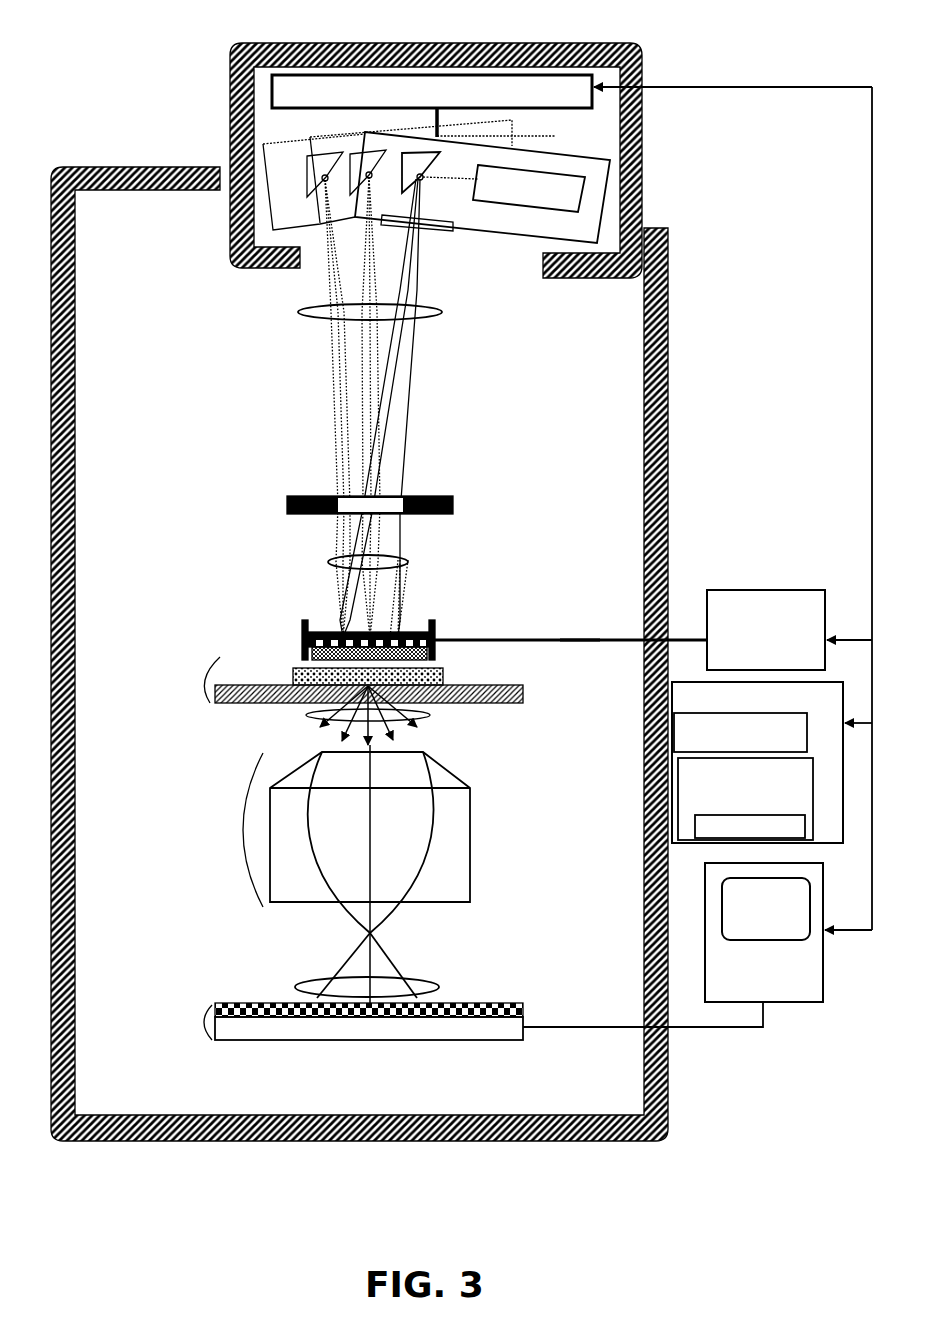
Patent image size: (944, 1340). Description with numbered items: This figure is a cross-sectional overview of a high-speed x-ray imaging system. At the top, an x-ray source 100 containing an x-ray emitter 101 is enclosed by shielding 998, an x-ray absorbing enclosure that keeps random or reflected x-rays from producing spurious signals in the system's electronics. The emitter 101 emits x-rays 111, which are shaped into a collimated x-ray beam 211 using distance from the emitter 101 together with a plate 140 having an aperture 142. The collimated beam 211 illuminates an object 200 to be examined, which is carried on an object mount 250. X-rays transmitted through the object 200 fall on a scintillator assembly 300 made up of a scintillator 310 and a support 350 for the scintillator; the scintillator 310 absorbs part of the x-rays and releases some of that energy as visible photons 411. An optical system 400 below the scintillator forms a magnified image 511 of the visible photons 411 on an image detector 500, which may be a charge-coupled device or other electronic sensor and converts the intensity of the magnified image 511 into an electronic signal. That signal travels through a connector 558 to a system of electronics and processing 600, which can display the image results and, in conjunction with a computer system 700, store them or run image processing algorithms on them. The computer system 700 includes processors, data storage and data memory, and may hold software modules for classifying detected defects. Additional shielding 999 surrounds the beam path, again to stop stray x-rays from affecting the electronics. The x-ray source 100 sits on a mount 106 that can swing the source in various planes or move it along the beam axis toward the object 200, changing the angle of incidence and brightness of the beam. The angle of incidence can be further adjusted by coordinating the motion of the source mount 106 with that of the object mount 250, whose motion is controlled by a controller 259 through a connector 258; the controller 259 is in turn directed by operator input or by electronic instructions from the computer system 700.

The shielding 998 is at (436, 139).
The additional shielding 999 is at (359, 619).
The mount 106 is at (432, 106).
The x-ray source 100 is at (438, 181).
The x-ray emitter 101 is at (438, 156).
The x-rays 111 is at (351, 335).
The plate 140 is at (392, 539).
The aperture 142 is at (414, 540).
The collimated x-ray beam 211 is at (338, 583).
The object 200 is at (406, 625).
The object mount 250 is at (571, 622).
The connector 258 is at (598, 606).
The controller 259 is at (766, 630).
The scintillator assembly 300 is at (367, 677).
The scintillator 310 is at (416, 669).
The support 350 is at (412, 687).
The visible photons 411 is at (325, 722).
The optical system 400 is at (243, 818).
The magnified image 511 is at (338, 972).
The image detector 500 is at (203, 1018).
The connector 558 is at (722, 1027).
The computer system 700 is at (757, 762).
The system of electronics and processing 600 is at (764, 932).